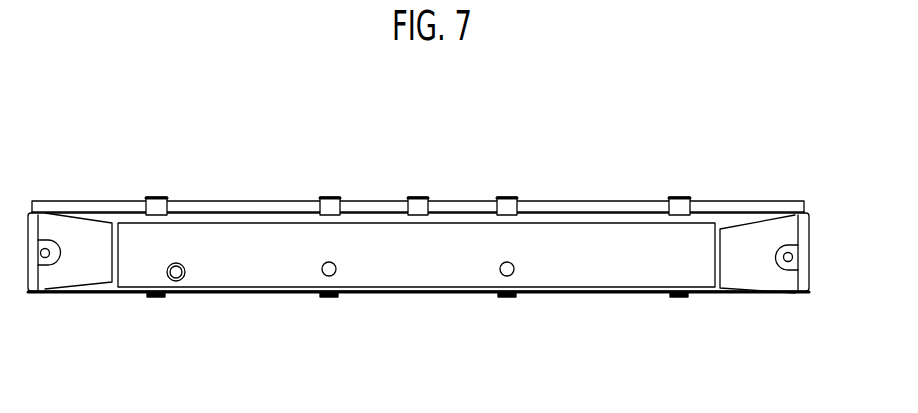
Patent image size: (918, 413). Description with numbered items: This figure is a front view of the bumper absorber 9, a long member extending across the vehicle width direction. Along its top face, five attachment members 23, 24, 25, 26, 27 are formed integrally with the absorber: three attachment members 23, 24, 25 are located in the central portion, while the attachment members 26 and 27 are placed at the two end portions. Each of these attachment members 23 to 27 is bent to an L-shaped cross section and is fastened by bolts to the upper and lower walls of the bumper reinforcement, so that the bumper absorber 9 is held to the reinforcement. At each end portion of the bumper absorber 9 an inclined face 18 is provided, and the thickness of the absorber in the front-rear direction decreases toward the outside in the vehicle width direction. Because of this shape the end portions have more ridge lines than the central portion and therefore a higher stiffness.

The bumper absorber 9 is at (410, 289).
The inclined face 18 is at (745, 268).
The attachment member 23 is at (339, 200).
The attachment member 24 is at (427, 200).
The attachment member 25 is at (516, 200).
The attachment member 26 is at (165, 199).
The attachment member 27 is at (690, 200).